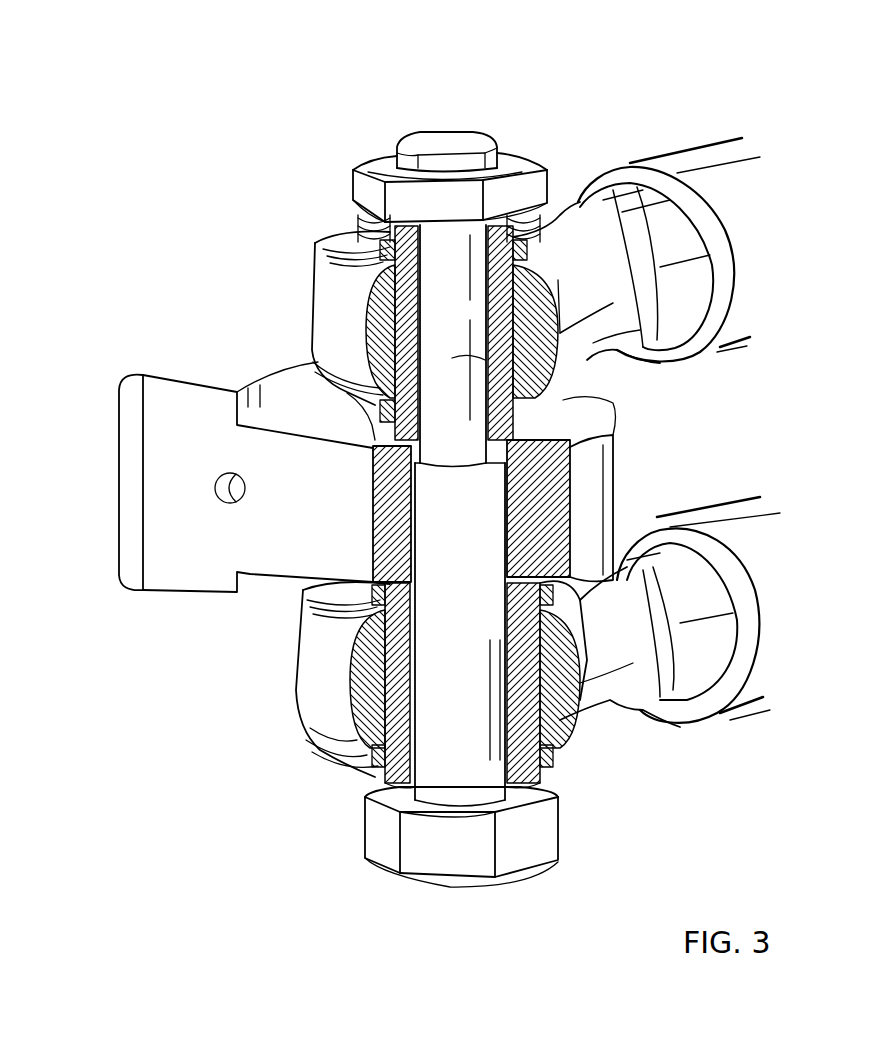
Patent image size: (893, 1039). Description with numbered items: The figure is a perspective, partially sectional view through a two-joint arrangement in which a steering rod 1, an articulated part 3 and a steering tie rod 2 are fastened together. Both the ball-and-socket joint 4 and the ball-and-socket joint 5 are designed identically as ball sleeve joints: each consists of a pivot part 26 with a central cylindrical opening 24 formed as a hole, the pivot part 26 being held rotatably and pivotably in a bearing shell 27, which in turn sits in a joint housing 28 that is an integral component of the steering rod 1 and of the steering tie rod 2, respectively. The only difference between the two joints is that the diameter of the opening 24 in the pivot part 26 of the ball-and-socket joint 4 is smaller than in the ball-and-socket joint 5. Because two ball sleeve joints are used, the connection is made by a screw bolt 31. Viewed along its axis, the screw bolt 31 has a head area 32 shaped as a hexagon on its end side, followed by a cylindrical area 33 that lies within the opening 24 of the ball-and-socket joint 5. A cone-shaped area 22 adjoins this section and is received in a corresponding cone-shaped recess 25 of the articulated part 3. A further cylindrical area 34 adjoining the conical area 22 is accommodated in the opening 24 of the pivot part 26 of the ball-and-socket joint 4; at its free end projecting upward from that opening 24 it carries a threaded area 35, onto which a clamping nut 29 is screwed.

The steering rod 1 is at (642, 213).
The steering tie rod 2 is at (703, 660).
The articulated part 3 is at (177, 565).
The ball-and-socket joint 4 is at (320, 310).
The ball-and-socket joint 5 is at (317, 712).
The cone-shaped area 22 is at (432, 490).
The opening 24 is at (470, 318).
The cone-shaped recess 25 is at (500, 538).
The pivot part 26 is at (318, 243).
The bearing shell 27 is at (380, 375).
The joint housing 28 is at (325, 283).
The clamping nut 29 is at (520, 190).
The screw bolt 31 is at (458, 498).
The head area 32 is at (525, 843).
The cylindrical area 33 is at (468, 673).
The cylindrical area 34 is at (455, 362).
The threaded area 35 is at (470, 150).